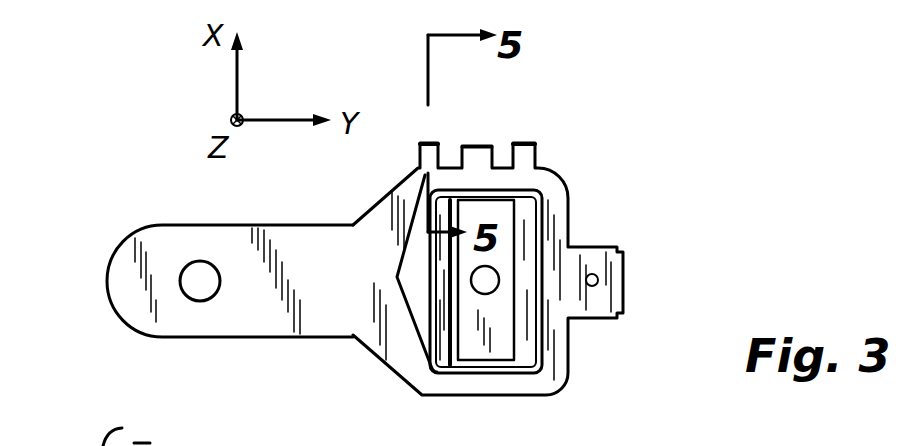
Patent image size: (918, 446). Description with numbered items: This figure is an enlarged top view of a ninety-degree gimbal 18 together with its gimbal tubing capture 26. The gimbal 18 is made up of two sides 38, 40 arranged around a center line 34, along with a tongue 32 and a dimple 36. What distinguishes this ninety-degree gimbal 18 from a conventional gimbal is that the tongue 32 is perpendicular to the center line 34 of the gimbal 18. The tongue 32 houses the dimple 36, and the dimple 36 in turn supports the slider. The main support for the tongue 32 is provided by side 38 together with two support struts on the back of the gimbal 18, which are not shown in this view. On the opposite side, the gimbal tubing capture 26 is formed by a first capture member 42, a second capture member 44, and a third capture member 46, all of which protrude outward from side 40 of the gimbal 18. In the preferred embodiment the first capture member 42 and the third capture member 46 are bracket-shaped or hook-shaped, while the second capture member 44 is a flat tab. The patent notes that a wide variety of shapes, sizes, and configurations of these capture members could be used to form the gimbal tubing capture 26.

The 90° gimbal 18 is at (50, 20).
The gimbal tubing capture 26 is at (548, 140).
The tongue 32 is at (493, 333).
The center line 34 is at (599, 279).
The dimple 36 is at (488, 278).
The side 38 is at (493, 382).
The side 40 is at (558, 176).
The first capture member 42 is at (515, 142).
The second capture member 44 is at (472, 143).
The third capture member 46 is at (423, 140).